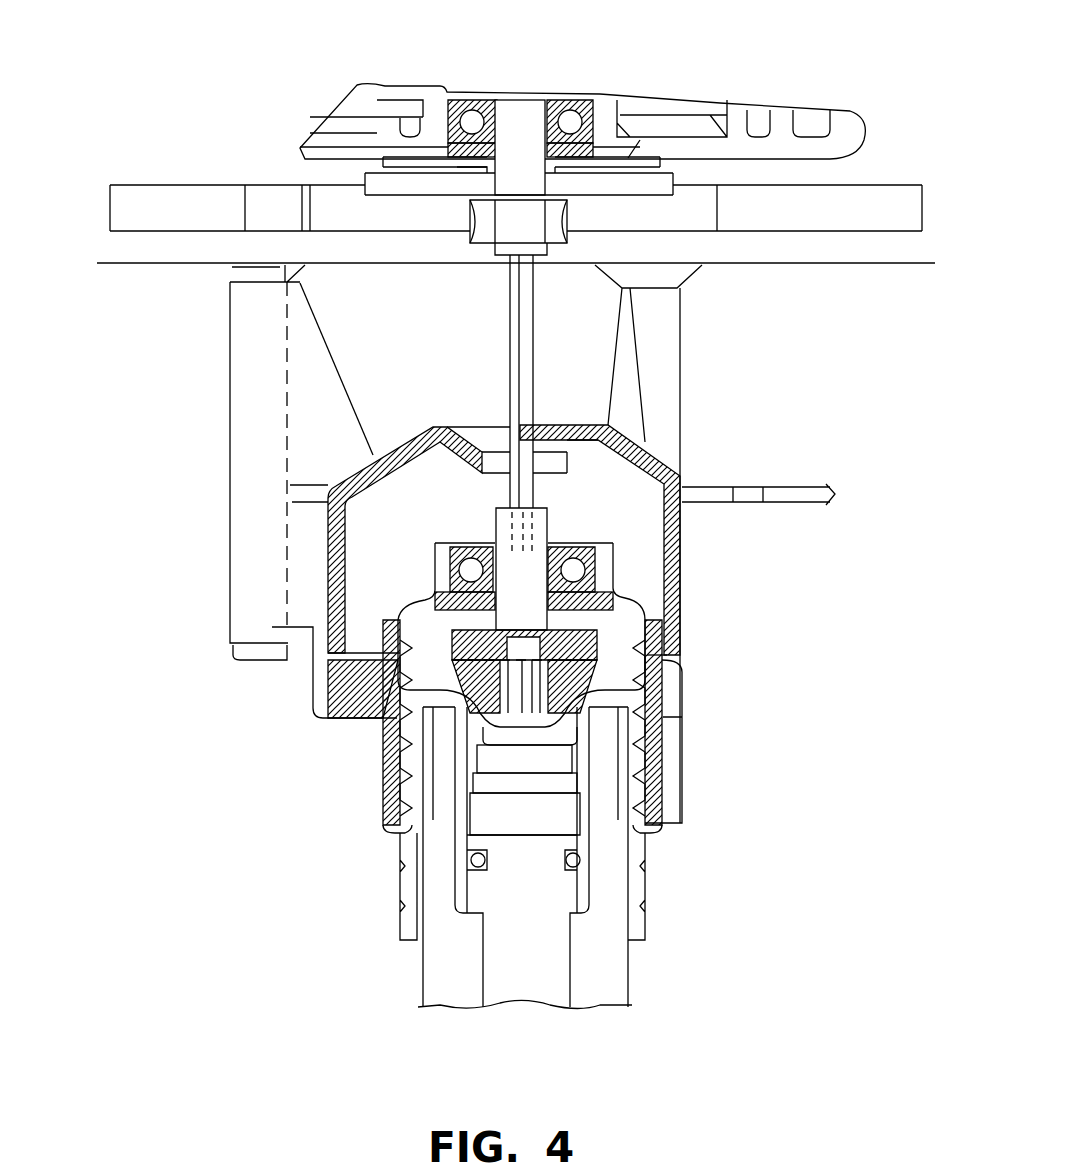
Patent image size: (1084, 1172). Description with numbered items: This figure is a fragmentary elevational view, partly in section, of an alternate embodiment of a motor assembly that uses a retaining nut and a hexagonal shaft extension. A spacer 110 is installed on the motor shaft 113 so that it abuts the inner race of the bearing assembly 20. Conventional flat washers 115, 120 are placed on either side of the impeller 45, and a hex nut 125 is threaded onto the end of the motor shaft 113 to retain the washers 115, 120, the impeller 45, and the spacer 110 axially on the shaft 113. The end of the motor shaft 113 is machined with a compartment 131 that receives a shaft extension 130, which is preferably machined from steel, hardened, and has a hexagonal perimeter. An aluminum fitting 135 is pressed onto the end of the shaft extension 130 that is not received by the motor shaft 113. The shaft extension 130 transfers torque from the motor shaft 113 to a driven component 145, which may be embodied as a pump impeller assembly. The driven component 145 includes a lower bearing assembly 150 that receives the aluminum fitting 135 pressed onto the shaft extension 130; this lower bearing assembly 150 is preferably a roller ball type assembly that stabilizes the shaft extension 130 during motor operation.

The bearing assembly 20 is at (453, 100).
The impeller 45 is at (110, 212).
The spacer 110 is at (480, 167).
The motor shaft 113 is at (533, 117).
The flat washer 115 is at (482, 168).
The flat washer 120 is at (365, 186).
The hex nut 125 is at (548, 226).
The shaft extension 130 is at (537, 347).
The compartment 131 is at (678, 90).
The aluminum fitting 135 is at (547, 518).
The driven component 145 is at (330, 562).
The lower bearing assembly 150 is at (593, 567).